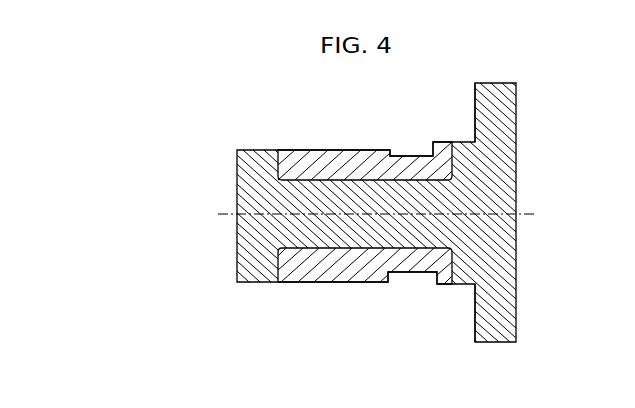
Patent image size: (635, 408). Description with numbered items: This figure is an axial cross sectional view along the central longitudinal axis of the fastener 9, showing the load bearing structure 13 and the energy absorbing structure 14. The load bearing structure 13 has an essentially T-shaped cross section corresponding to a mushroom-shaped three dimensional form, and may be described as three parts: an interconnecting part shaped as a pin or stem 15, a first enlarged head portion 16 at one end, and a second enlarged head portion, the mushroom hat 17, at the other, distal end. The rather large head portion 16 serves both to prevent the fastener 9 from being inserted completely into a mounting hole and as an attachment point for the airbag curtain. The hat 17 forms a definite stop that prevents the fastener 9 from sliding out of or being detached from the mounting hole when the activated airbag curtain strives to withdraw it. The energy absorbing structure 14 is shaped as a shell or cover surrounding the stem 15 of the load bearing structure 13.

The fastener 9 is at (213, 119).
The load bearing structure 13 is at (517, 156).
The energy absorbing structure 14 is at (300, 267).
The stem 15 is at (352, 212).
The head portion 16 is at (498, 233).
The hat 17 is at (252, 222).